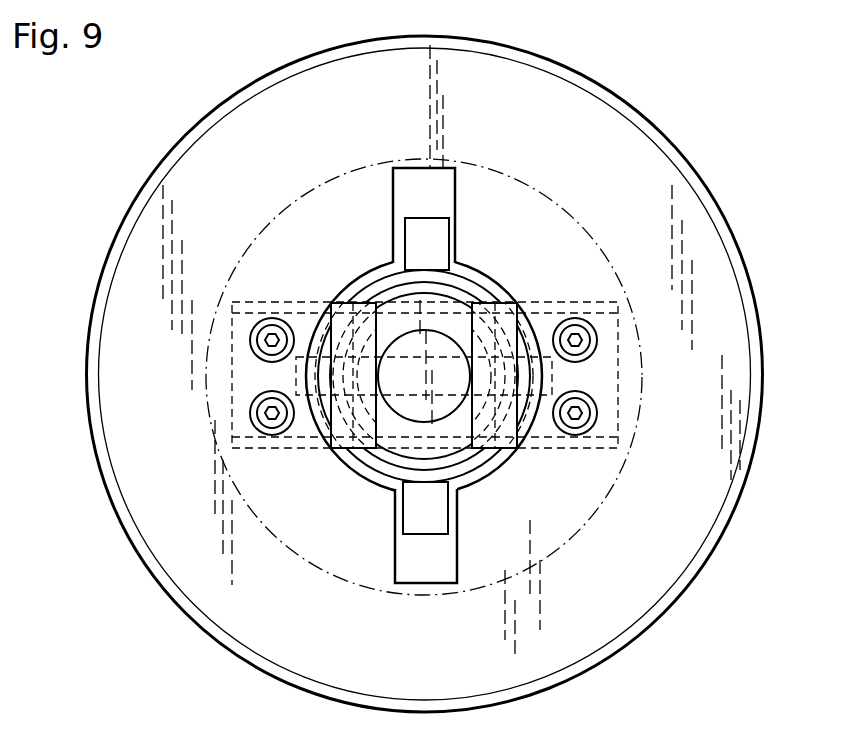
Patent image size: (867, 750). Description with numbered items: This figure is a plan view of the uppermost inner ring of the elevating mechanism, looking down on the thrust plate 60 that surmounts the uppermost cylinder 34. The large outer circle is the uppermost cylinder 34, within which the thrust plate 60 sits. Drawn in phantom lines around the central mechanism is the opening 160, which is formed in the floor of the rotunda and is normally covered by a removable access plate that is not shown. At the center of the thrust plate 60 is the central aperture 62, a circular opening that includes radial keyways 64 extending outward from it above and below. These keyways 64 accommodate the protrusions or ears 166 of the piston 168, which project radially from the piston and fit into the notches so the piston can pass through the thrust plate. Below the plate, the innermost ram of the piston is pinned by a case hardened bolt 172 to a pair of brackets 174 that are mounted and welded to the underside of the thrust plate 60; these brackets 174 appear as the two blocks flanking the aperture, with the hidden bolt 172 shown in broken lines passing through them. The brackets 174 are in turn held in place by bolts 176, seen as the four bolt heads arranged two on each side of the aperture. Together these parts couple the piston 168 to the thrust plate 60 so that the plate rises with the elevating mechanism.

The uppermost cylinder 34 is at (697, 188).
The thrust plate 60 is at (623, 150).
The central aperture 62 is at (380, 268).
The radial keyways 64 is at (393, 190).
The opening 160 is at (504, 161).
The ears 166 is at (436, 234).
The piston 168 is at (447, 297).
The case hardened bolt 172 is at (503, 292).
The brackets 174 is at (310, 443).
The bolts 176 is at (268, 400).